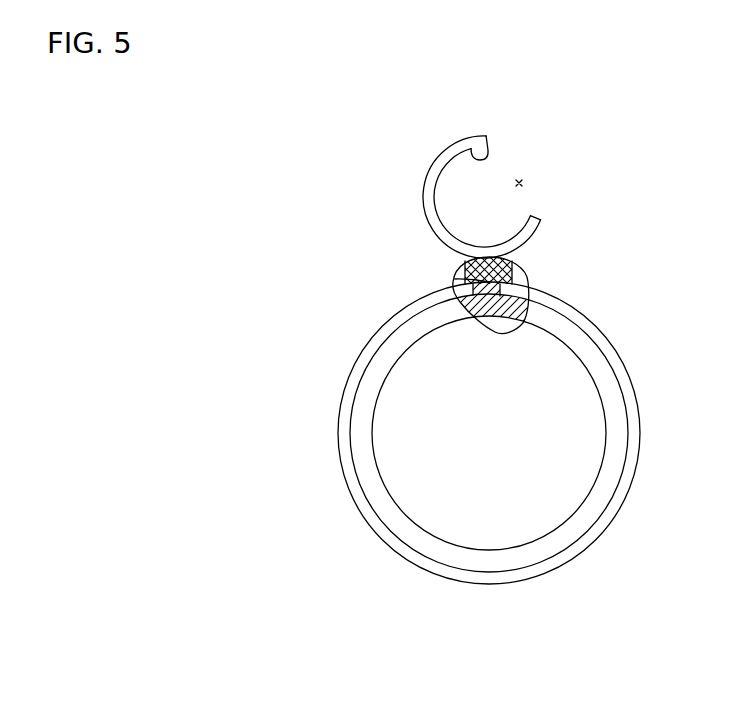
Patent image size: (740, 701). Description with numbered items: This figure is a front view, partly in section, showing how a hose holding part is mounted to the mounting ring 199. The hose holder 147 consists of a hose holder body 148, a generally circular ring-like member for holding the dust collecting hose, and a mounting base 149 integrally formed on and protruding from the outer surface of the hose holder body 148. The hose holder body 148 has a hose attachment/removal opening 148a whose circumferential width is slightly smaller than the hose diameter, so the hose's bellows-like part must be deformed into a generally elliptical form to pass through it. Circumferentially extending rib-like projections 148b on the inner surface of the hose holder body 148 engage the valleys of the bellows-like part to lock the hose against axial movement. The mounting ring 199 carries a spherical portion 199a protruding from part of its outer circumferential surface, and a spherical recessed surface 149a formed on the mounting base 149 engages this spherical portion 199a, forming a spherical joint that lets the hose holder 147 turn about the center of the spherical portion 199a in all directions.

The hose holder 147 is at (494, 210).
The hose holder body 148 is at (427, 192).
The hose attachment/removal opening 148a is at (519, 183).
The rib-like projections 148b is at (490, 152).
The mounting base 149 is at (528, 276).
The spherical recessed surface 149a is at (512, 263).
The mounting ring 199 is at (373, 370).
The spherical portion 199a is at (455, 279).